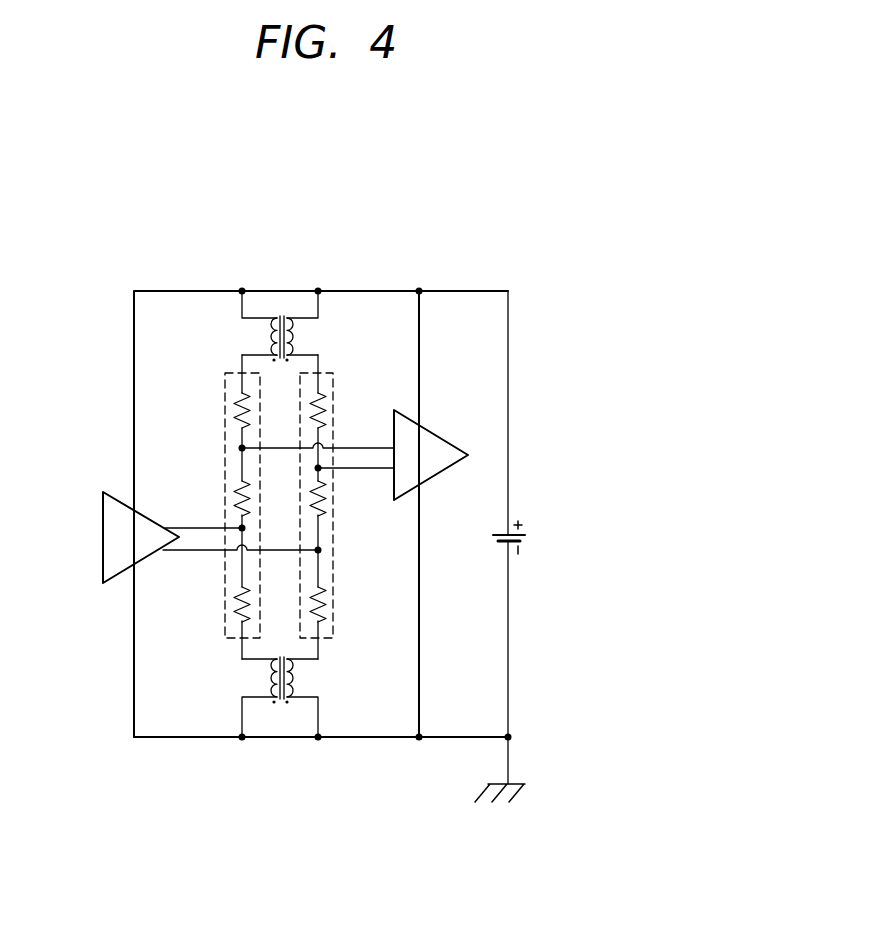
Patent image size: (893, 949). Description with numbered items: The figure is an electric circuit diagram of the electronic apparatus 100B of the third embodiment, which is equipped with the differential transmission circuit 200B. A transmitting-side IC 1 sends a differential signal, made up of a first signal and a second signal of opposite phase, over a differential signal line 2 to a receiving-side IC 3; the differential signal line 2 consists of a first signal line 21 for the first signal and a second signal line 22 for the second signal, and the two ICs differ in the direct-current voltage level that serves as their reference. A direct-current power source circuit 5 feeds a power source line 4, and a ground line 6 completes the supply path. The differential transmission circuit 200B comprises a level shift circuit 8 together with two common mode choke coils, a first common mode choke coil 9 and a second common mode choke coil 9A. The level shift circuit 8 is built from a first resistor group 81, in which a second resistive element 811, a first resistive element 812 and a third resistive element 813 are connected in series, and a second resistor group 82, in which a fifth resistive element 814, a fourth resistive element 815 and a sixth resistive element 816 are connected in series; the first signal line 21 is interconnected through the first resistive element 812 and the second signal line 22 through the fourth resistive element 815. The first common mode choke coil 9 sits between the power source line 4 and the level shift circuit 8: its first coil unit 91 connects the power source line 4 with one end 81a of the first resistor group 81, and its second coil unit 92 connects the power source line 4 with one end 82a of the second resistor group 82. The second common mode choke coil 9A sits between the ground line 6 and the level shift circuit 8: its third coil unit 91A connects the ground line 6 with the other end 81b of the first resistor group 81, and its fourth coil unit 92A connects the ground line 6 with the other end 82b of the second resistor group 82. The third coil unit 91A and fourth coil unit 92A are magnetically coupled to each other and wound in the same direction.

The electronic apparatus 100B is at (397, 186).
The differential transmission circuit 200B is at (263, 272).
The transmitting-side IC 1 is at (103, 548).
The differential signal line 2 is at (96, 403).
The first signal line 21 is at (197, 527).
The second signal line 22 is at (188, 549).
The receiving-side IC 3 is at (442, 433).
The power source line 4 is at (180, 291).
The direct-current power source circuit 5 is at (527, 537).
The ground line 6 is at (146, 740).
The level shift circuit 8 is at (96, 313).
The first resistor group 81 is at (225, 374).
The second resistor group 82 is at (300, 374).
The one end of the first resistor group 81a is at (243, 356).
The other end of the first resistor group 81b is at (242, 645).
The one end of the second resistor group 82a is at (318, 360).
The other end of the second resistor group 82b is at (318, 643).
The second resistive element 811 is at (236, 405).
The first resistive element 812 is at (237, 490).
The third resistive element 813 is at (237, 606).
The fifth resistive element 814 is at (323, 403).
The fourth resistive element 815 is at (323, 497).
The sixth resistive element 816 is at (325, 604).
The first common mode choke coil 9 is at (352, 262).
The first coil unit 91 is at (263, 335).
The second coil unit 92 is at (301, 333).
The second common mode choke coil 9A is at (332, 787).
The third coil unit 91A is at (266, 693).
The fourth coil unit 92A is at (298, 693).